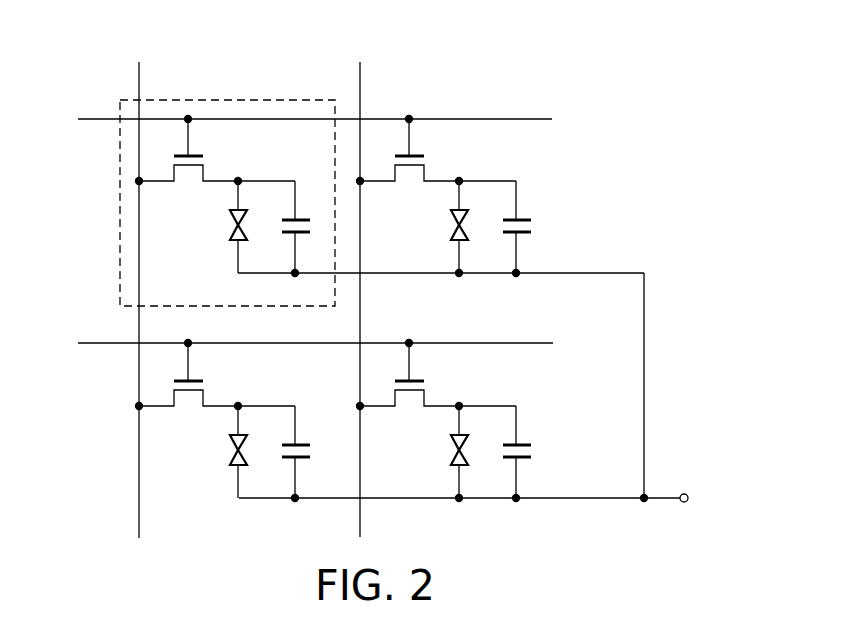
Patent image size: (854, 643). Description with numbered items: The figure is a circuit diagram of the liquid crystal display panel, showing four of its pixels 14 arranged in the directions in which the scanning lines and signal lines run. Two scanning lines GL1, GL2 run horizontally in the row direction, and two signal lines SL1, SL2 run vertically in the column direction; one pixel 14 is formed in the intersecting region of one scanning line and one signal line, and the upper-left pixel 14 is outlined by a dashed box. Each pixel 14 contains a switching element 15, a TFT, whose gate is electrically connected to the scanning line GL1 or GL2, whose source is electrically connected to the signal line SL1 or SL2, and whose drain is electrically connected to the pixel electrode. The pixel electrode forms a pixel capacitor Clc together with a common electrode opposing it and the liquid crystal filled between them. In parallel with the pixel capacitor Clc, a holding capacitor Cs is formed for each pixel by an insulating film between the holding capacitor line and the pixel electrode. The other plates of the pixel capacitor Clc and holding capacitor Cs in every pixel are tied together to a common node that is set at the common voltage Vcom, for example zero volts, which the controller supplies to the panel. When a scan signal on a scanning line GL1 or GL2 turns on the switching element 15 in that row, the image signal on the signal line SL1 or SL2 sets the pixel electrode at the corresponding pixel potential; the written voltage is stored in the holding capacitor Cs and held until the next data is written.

The pixel 14 is at (222, 98).
The switching element 15 is at (187, 185).
The pixel capacitor Clc is at (230, 229).
The holding capacitor Cs is at (321, 198).
The scanning line GL1 is at (294, 119).
The scanning line GL2 is at (295, 345).
The signal line SL1 is at (137, 289).
The signal line SL2 is at (358, 288).
The common voltage Vcom is at (693, 497).